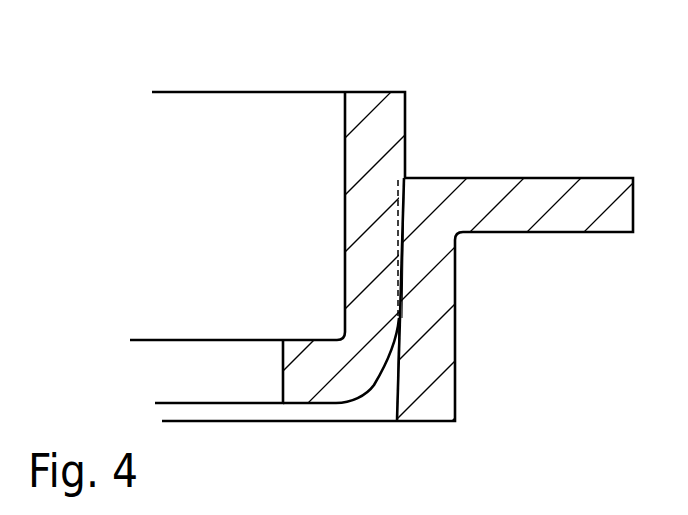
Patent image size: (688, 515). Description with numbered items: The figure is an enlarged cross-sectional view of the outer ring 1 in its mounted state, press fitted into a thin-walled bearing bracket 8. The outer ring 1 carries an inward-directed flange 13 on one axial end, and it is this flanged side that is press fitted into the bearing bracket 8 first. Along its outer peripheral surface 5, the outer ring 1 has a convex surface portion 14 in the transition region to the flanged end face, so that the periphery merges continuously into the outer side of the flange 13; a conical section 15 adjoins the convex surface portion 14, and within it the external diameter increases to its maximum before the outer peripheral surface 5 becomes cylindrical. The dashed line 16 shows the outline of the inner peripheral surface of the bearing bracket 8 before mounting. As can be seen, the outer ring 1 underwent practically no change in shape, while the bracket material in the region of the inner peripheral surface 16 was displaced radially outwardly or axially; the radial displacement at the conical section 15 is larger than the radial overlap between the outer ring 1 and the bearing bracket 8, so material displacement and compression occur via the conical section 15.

The outer ring 1 is at (370, 150).
The bearing bracket 8 is at (485, 202).
The outer peripheral surface 5 is at (418, 287).
The flange 13 is at (307, 377).
The convex surface portion 14 is at (361, 401).
The conical section 15 is at (389, 363).
The dashed line 16 is at (386, 233).